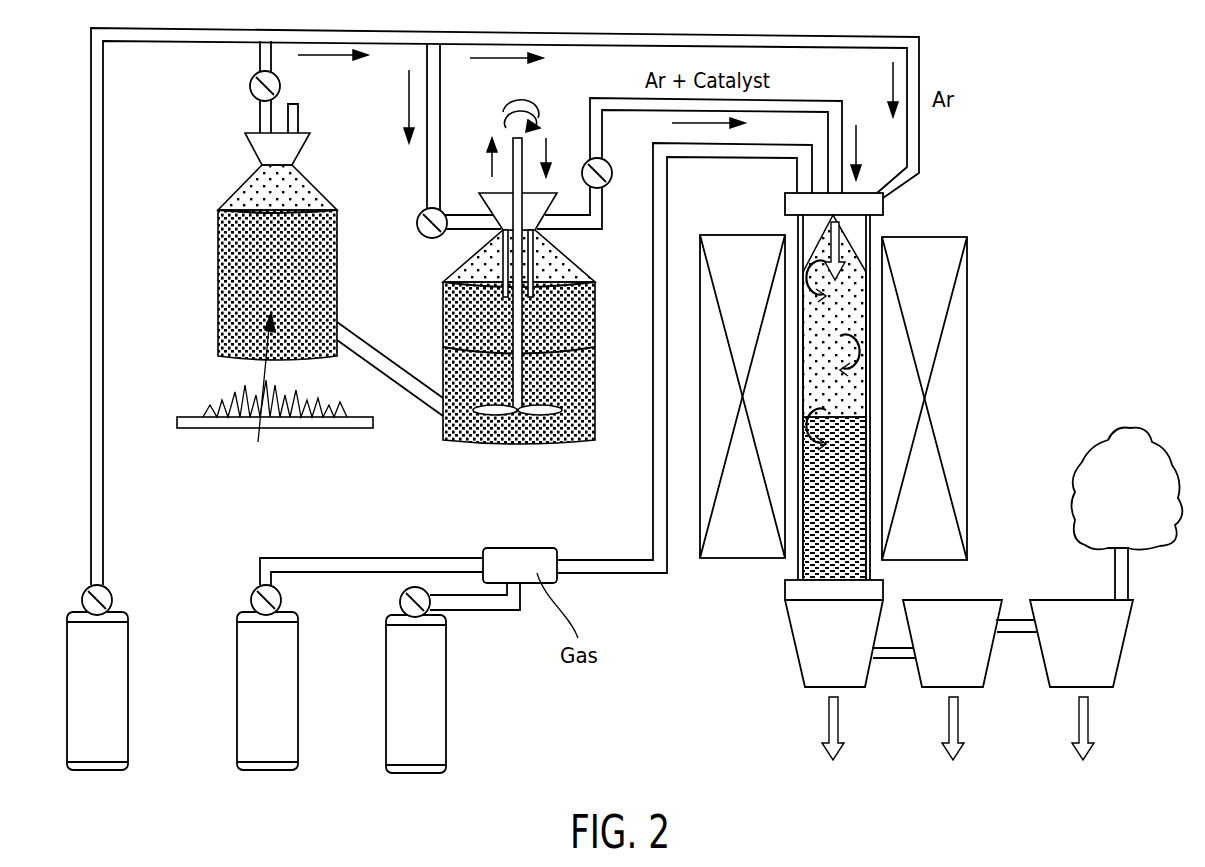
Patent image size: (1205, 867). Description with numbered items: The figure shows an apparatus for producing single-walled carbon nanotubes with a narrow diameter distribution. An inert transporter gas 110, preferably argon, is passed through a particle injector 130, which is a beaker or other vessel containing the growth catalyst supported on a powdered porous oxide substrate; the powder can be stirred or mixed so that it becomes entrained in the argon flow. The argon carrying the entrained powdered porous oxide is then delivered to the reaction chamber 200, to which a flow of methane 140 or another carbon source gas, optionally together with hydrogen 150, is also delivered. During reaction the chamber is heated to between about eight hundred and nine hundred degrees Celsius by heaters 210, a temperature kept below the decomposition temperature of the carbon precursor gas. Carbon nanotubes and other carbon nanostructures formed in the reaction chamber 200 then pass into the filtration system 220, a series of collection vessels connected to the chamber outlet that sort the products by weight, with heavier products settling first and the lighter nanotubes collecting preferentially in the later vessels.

The inert transporter gas 110 is at (117, 677).
The particle injector 130 is at (532, 392).
The methane 140 is at (294, 677).
The hydrogen 150 is at (438, 680).
The reaction chamber 200 is at (947, 219).
The heaters 210 is at (968, 300).
The filtration system 220 is at (960, 632).